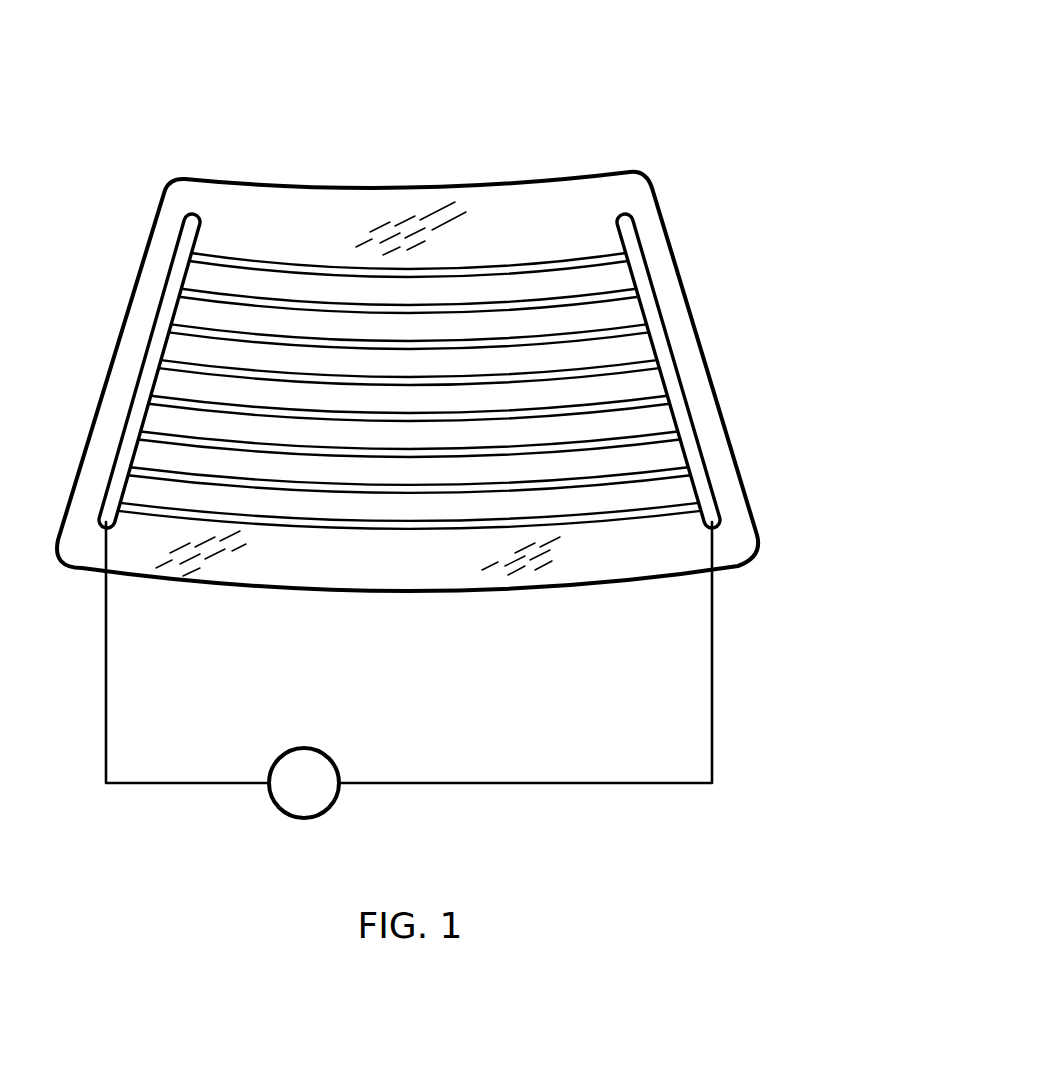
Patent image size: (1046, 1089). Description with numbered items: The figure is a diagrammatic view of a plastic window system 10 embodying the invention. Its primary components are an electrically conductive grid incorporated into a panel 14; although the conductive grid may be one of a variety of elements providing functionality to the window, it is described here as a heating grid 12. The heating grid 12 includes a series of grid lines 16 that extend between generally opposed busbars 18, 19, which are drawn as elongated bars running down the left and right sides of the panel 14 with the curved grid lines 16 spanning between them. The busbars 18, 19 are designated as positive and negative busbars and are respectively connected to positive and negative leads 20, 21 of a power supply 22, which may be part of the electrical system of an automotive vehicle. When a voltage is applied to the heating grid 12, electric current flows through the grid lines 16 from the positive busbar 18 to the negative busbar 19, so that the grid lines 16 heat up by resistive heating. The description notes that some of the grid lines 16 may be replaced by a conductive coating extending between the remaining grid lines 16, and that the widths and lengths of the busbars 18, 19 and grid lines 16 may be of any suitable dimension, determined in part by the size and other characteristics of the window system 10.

The plastic window system 10 is at (633, 68).
The heating grid 12 is at (542, 257).
The panel 14 is at (409, 386).
The grid lines 16 is at (249, 258).
The positive busbar 18 is at (180, 262).
The negative busbar 19 is at (637, 262).
The positive lead 20 is at (160, 783).
The negative lead 21 is at (582, 783).
The power supply 22 is at (305, 818).